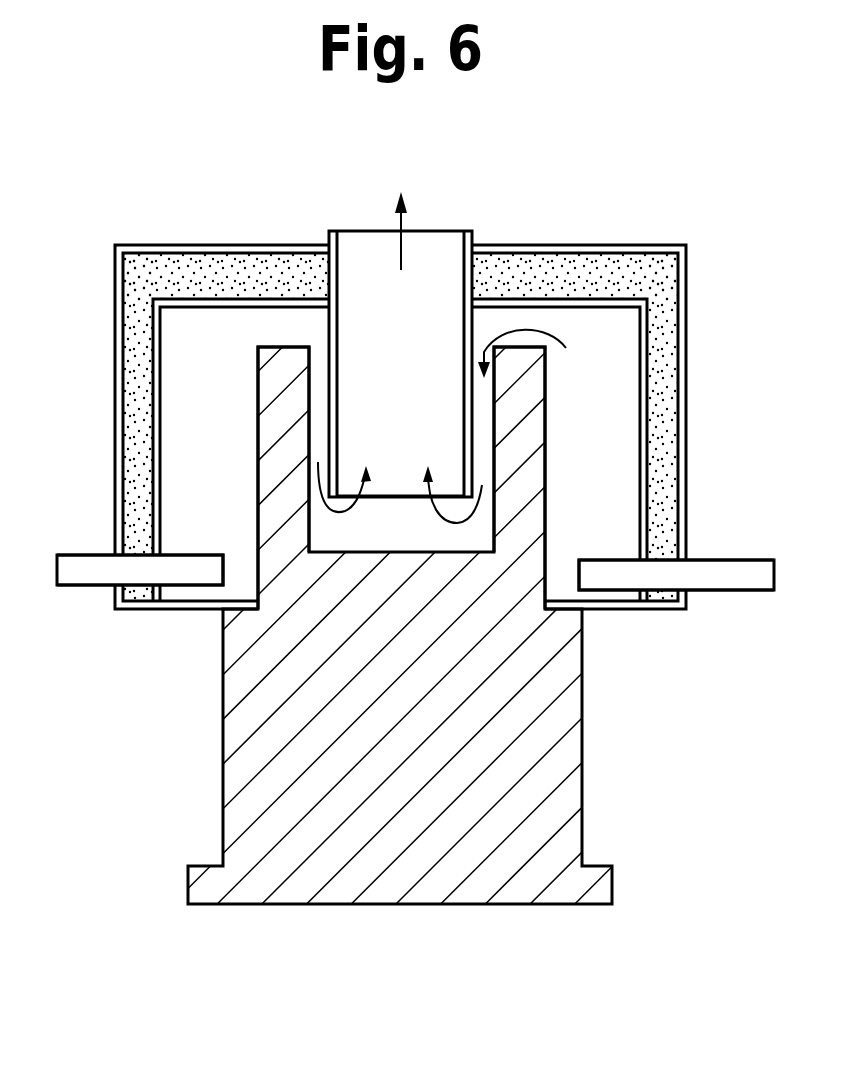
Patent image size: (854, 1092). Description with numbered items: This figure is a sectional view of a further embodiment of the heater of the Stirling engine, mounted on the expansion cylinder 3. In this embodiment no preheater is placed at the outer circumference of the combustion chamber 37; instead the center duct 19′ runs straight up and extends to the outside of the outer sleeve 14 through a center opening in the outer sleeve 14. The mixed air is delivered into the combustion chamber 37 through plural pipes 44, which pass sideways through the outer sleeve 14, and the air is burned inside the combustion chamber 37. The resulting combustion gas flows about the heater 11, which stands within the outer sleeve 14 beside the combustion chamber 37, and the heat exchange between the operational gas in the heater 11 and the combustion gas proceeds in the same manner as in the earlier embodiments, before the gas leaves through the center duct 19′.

The expansion cylinder 3 is at (232, 785).
The heater 11 is at (270, 428).
The combustion chamber 37 is at (548, 428).
The outer sleeve 14 is at (578, 246).
The center duct 19′ is at (336, 268).
The pipes 44 is at (80, 587).